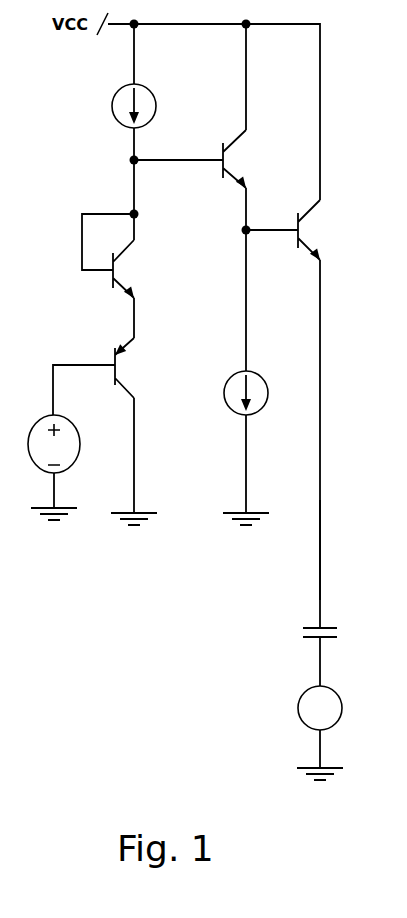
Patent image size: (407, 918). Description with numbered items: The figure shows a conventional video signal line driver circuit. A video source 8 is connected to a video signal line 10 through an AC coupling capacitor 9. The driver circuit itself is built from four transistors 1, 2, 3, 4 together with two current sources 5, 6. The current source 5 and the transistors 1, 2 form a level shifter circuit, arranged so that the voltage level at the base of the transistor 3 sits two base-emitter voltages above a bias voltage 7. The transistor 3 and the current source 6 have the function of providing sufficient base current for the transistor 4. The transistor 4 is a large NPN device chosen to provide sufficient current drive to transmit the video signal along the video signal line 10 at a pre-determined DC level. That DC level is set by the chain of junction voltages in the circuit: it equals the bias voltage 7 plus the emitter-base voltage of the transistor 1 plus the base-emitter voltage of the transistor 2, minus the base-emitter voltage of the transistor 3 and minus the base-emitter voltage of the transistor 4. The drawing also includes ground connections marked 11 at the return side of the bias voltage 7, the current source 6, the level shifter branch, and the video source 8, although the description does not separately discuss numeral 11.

The transistor 1 is at (130, 386).
The transistor 2 is at (128, 284).
The transistor 3 is at (235, 173).
The transistor 4 is at (310, 247).
The current source 5 is at (148, 105).
The current source 6 is at (256, 383).
The bias voltage 7 is at (64, 430).
The video source 8 is at (330, 700).
The AC coupling capacitor 9 is at (328, 627).
The video signal line 10 is at (323, 547).
The ground 11 is at (70, 508).